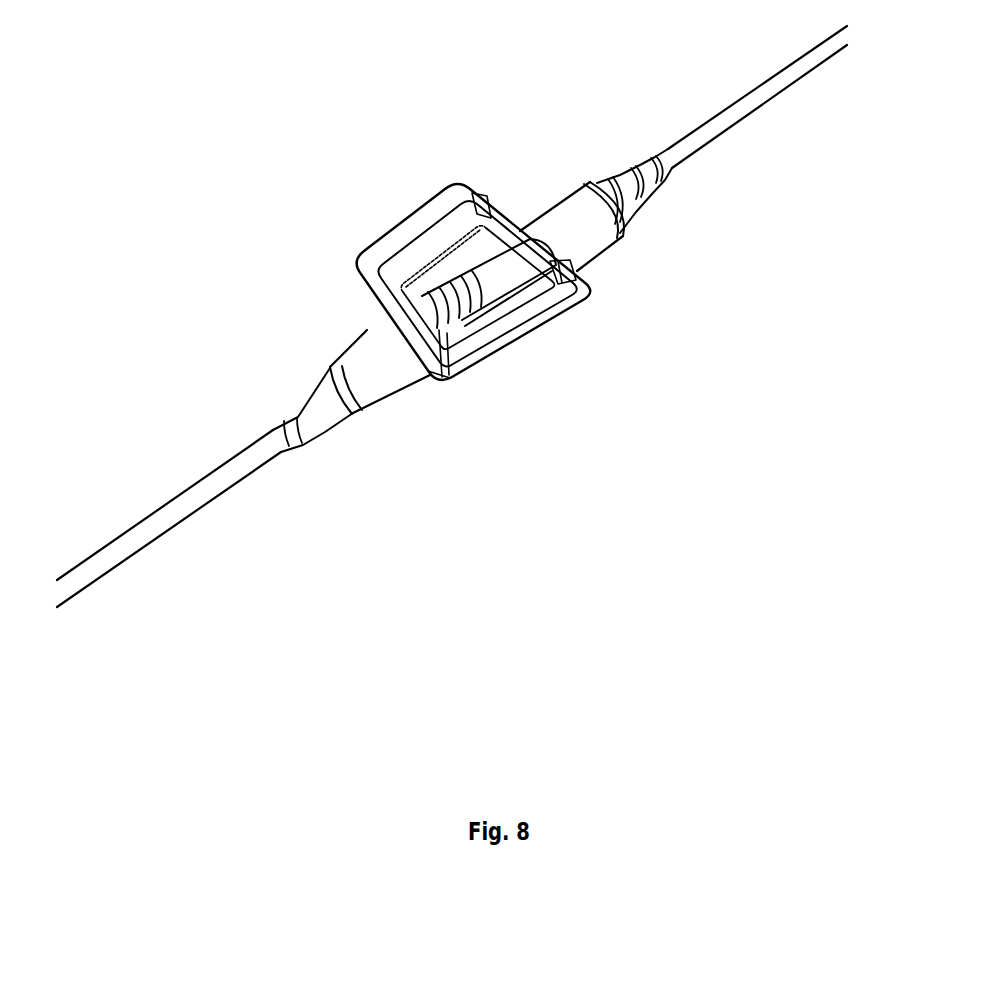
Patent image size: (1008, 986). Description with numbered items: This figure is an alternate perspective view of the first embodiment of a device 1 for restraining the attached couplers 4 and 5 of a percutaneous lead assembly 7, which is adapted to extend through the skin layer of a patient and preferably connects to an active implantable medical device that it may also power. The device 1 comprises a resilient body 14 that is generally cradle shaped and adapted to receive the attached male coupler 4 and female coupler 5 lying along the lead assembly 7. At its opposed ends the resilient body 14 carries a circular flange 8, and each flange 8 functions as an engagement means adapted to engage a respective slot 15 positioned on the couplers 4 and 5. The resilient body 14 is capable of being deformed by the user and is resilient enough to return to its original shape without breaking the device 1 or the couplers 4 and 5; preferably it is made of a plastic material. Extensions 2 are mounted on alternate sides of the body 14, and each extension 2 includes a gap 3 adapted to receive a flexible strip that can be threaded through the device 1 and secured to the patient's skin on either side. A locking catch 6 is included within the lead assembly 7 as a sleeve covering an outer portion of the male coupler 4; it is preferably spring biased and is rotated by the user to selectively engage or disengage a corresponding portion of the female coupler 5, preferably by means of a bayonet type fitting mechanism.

The device 1 is at (482, 346).
The extensions 2 is at (506, 324).
The gap 3 is at (532, 295).
The male coupler 4 is at (565, 228).
The female coupler 5 is at (387, 375).
The locking catch 6 is at (497, 272).
The percutaneous lead assembly 7 is at (702, 142).
The circular flange 8 is at (391, 302).
The resilient body 14 is at (483, 332).
The slot 15 is at (421, 308).